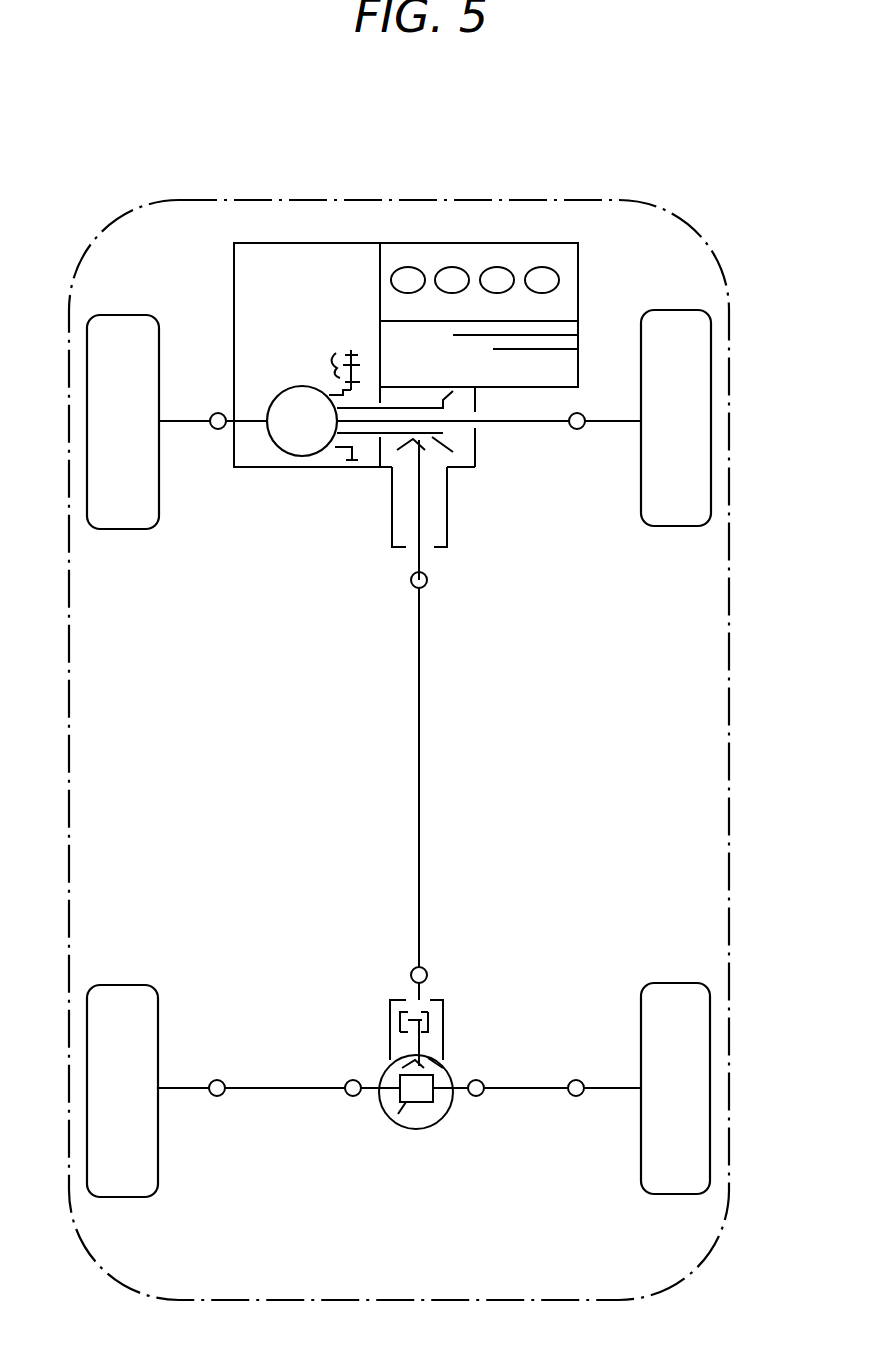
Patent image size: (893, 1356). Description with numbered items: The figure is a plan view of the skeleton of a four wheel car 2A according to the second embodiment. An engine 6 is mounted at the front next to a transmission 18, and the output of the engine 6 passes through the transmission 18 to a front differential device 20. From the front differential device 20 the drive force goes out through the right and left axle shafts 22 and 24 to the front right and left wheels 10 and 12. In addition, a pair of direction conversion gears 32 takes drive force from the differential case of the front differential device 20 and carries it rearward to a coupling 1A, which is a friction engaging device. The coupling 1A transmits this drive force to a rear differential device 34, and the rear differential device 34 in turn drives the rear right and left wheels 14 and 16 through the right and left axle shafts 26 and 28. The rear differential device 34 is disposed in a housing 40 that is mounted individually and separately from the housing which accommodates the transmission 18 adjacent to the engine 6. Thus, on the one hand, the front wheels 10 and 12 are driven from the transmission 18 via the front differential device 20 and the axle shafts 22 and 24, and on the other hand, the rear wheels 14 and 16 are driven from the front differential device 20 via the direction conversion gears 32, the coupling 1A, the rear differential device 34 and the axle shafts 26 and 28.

The car 2A is at (656, 186).
The engine 6 is at (470, 256).
The transmission 18 is at (300, 256).
The front differential device 20 is at (302, 440).
The left axle shaft 22 is at (255, 425).
The right axle shaft 24 is at (544, 424).
The pair of direction conversion gears 32 is at (463, 470).
The front left wheel 10 is at (124, 315).
The front right wheel 12 is at (673, 310).
The rear left wheel 14 is at (121, 985).
The rear right wheel 16 is at (673, 983).
The coupling 1A is at (393, 1000).
The housing 40 is at (451, 1002).
The rear differential device 34 is at (421, 1097).
The left axle shaft 26 is at (288, 1088).
The right axle shaft 28 is at (532, 1088).